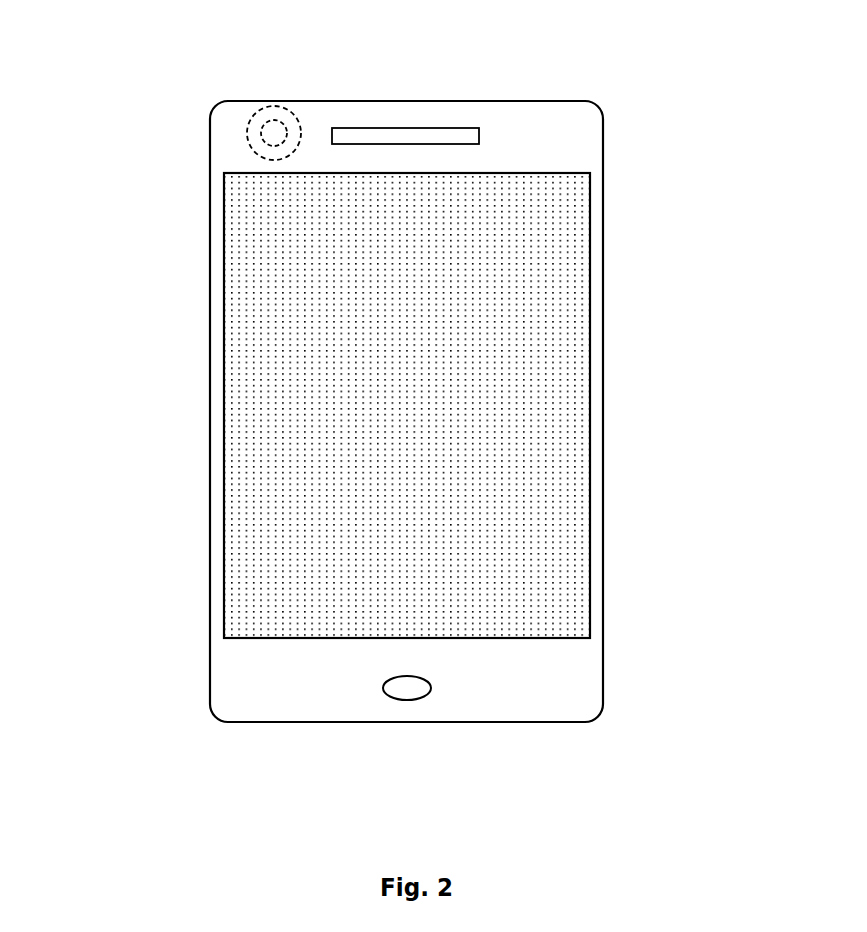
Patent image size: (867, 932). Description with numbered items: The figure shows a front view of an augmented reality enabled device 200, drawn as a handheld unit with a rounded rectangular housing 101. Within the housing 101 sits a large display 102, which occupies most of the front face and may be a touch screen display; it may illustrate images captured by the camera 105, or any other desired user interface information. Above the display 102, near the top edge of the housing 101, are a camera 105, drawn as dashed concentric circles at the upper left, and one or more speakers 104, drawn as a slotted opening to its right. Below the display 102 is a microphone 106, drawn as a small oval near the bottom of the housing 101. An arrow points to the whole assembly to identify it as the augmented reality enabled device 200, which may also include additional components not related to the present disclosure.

The augmented reality enabled device 200 is at (150, 721).
The housing 101 is at (604, 143).
The display 102 is at (590, 260).
The speaker 104 is at (377, 128).
The camera 105 is at (289, 110).
The microphone 106 is at (423, 698).